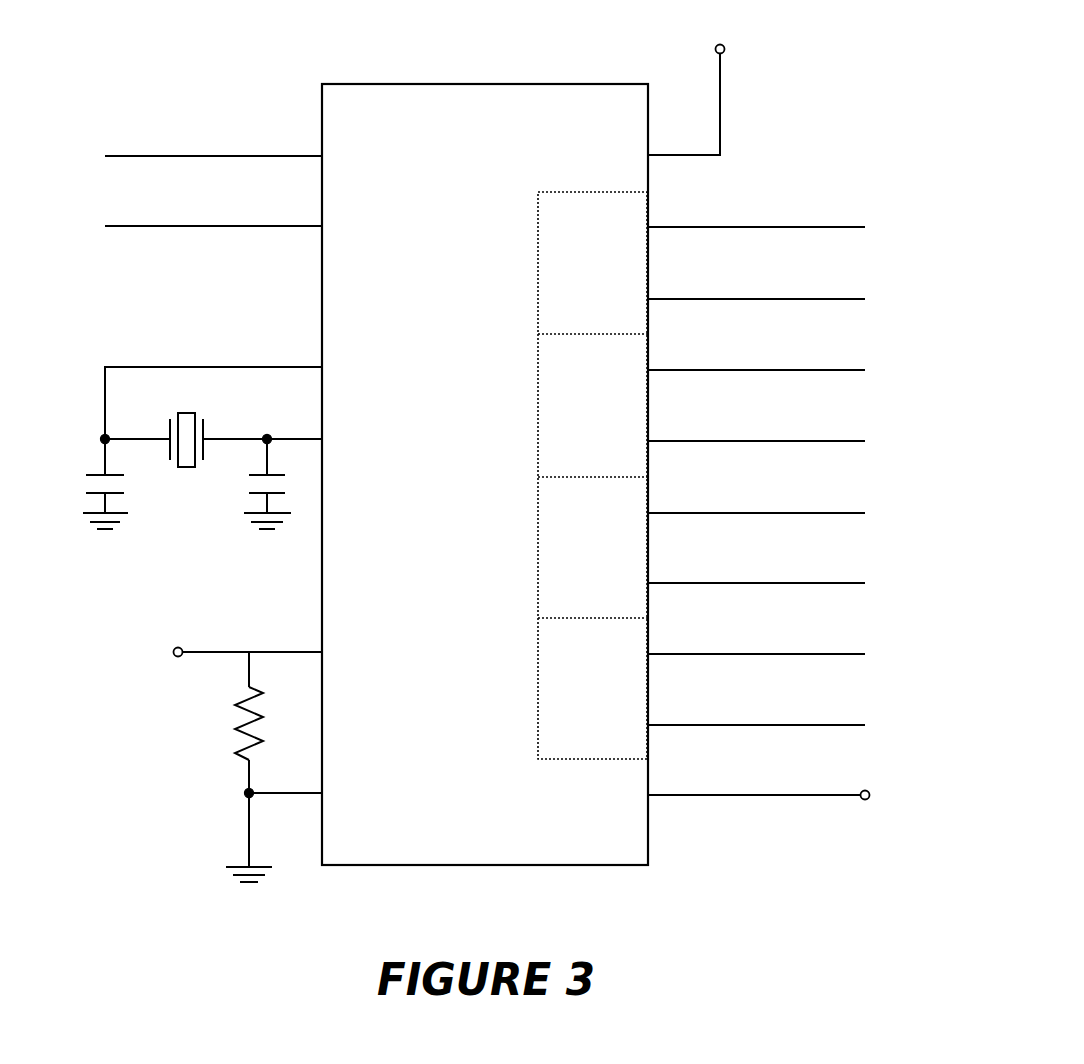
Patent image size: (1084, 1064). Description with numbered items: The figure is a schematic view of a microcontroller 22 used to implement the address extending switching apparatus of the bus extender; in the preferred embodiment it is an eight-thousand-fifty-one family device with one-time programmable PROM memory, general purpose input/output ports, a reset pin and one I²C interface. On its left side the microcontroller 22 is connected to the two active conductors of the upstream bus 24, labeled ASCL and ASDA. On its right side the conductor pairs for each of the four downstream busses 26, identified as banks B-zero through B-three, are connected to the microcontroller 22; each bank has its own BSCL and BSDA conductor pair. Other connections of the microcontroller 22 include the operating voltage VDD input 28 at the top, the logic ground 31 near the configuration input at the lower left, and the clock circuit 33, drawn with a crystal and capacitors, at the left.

The microcontroller 22 is at (422, 541).
The upstream bus 24 is at (95, 156).
The downstream busses 26 is at (881, 216).
The operating voltage VDD input 28 is at (722, 107).
The logic ground 31 is at (315, 793).
The clock circuit 33 is at (103, 391).